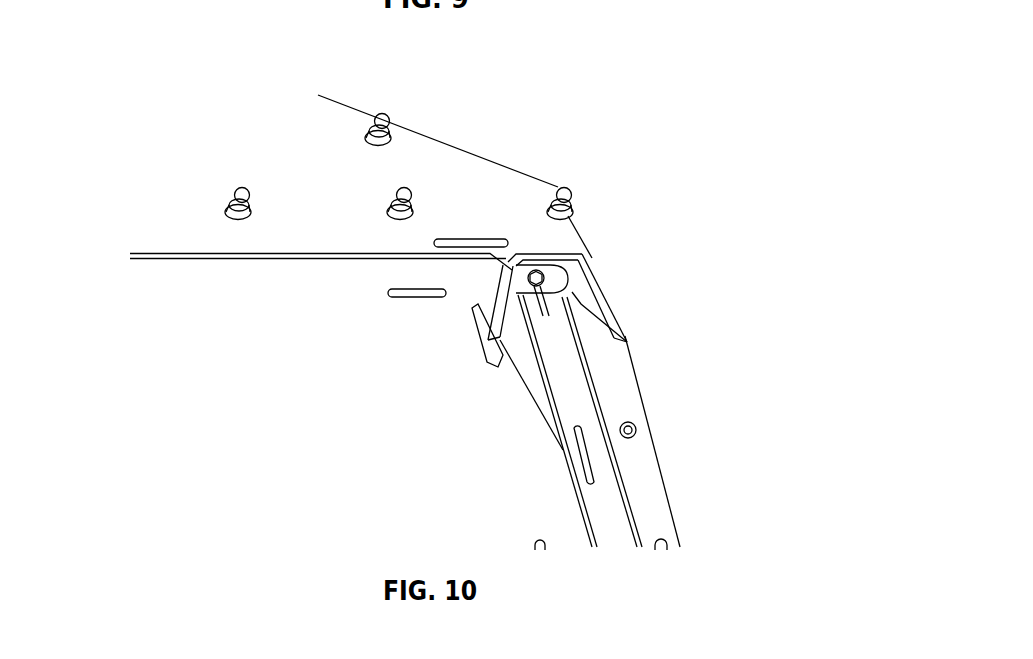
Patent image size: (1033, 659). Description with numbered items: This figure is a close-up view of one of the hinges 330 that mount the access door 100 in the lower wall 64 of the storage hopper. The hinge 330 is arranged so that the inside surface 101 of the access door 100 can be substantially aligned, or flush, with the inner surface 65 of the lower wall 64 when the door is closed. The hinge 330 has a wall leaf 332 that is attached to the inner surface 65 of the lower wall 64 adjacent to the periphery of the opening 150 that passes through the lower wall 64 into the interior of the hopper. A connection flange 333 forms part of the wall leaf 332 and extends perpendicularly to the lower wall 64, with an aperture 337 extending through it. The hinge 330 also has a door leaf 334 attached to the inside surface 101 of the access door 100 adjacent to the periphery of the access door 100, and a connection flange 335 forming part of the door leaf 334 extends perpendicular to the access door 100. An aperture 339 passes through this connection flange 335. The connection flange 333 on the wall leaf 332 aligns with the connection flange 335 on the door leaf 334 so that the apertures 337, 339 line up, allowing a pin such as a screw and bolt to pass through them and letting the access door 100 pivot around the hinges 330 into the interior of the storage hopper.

The access door 100 is at (458, 443).
The inside surface 101 is at (213, 315).
The lower wall 64 is at (347, 182).
The inner surface 65 is at (282, 193).
The opening 150 is at (405, 257).
The hinge 330 is at (682, 239).
The wall leaf 332 is at (603, 299).
The connection flange 333 is at (587, 255).
The door leaf 334 is at (540, 402).
The connection flange 335 is at (558, 260).
The aperture 337 is at (546, 306).
The aperture 339 is at (512, 340).